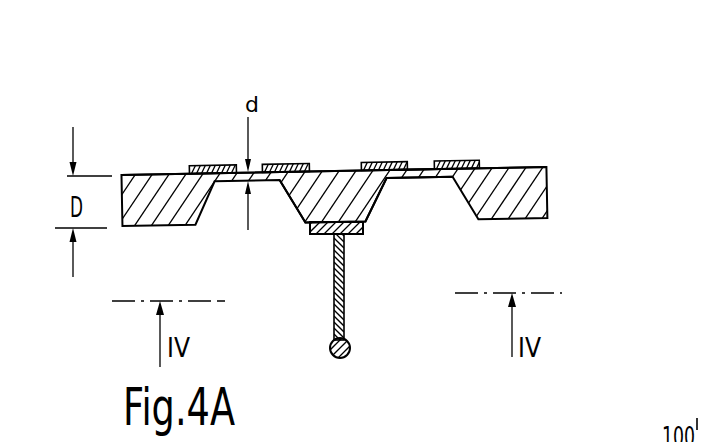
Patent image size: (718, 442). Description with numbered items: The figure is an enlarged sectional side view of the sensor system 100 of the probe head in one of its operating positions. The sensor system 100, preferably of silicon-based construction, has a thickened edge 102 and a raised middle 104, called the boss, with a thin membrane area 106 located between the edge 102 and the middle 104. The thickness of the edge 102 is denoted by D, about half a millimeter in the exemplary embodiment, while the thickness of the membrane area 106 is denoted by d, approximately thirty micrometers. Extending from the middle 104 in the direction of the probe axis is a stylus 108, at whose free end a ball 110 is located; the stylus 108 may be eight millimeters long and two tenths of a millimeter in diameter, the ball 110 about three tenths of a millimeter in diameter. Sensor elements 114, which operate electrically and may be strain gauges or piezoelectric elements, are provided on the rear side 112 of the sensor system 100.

The sensor system 100 is at (590, 154).
The thickened edge 102 is at (513, 203).
The raised middle 104 is at (305, 213).
The membrane area 106 is at (438, 173).
The stylus 108 is at (333, 302).
The ball 110 is at (349, 355).
The rear side 112 is at (506, 165).
The sensor elements 114 is at (210, 167).